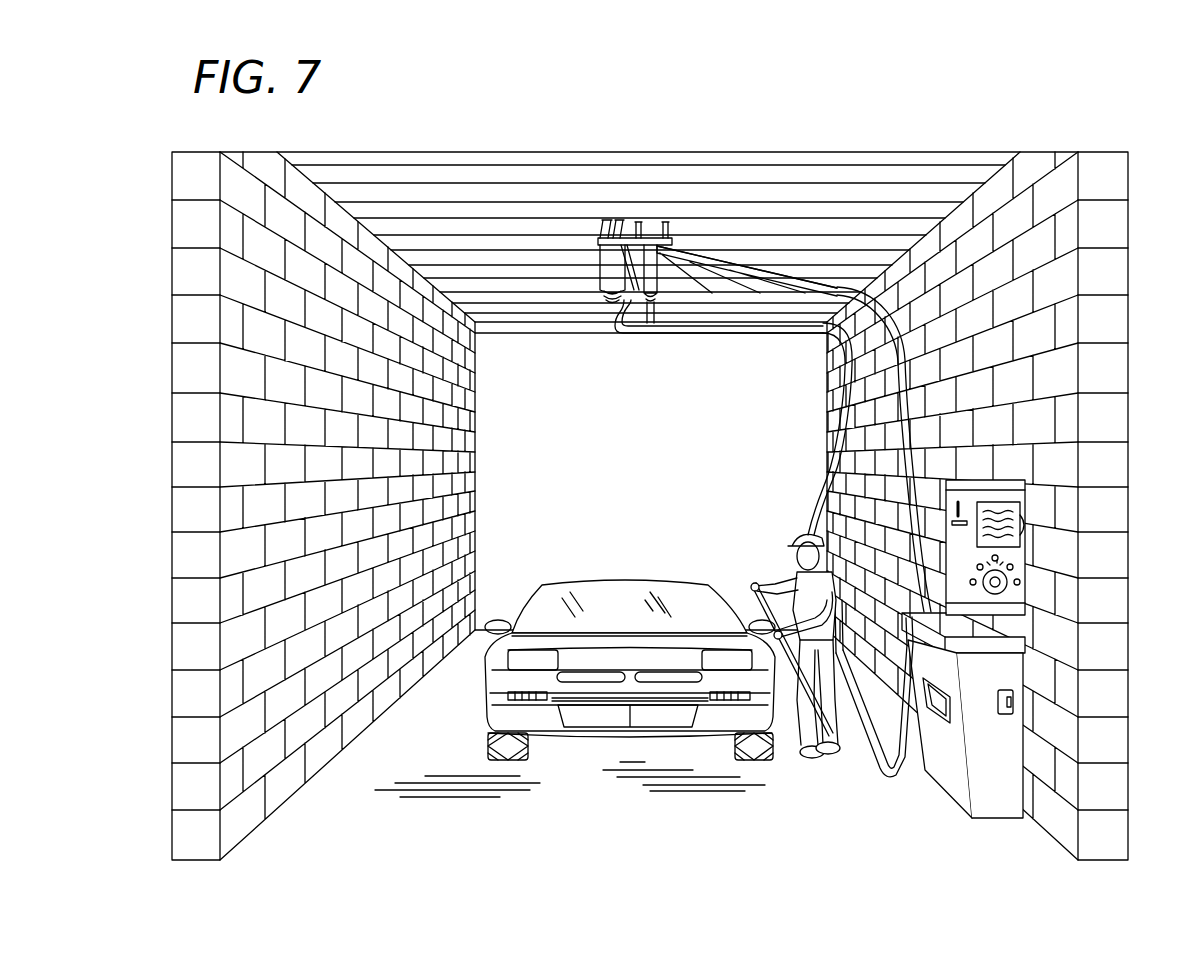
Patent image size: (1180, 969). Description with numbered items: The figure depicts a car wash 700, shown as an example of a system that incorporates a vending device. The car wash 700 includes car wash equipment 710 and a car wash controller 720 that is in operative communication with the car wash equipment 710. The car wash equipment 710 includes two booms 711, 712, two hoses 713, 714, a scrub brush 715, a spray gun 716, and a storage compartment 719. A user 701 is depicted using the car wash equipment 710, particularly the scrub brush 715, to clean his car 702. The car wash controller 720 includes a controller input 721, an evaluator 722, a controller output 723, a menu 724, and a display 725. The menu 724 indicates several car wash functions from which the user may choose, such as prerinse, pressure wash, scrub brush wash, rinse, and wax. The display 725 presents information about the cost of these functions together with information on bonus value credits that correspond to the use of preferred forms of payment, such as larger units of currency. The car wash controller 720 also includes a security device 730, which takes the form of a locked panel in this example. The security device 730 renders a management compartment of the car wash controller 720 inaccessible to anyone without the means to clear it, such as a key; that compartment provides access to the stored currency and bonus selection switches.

The car wash 700 is at (1058, 103).
The car wash equipment 710 is at (600, 83).
The storage compartment 719 is at (672, 238).
The boom 711 is at (836, 287).
The boom 712 is at (768, 345).
The hose 713 is at (897, 420).
The hose 714 is at (797, 522).
The scrub brush 715 is at (902, 762).
The spray gun 716 is at (820, 530).
The car wash controller 720 is at (1028, 505).
The controller input 721 is at (962, 502).
The evaluator 722 is at (1018, 500).
The controller output 723 is at (1022, 543).
The menu 724 is at (1015, 593).
The display 725 is at (1022, 530).
The security device 730 is at (1005, 708).
The car 702 is at (463, 697).
The user 701 is at (822, 760).